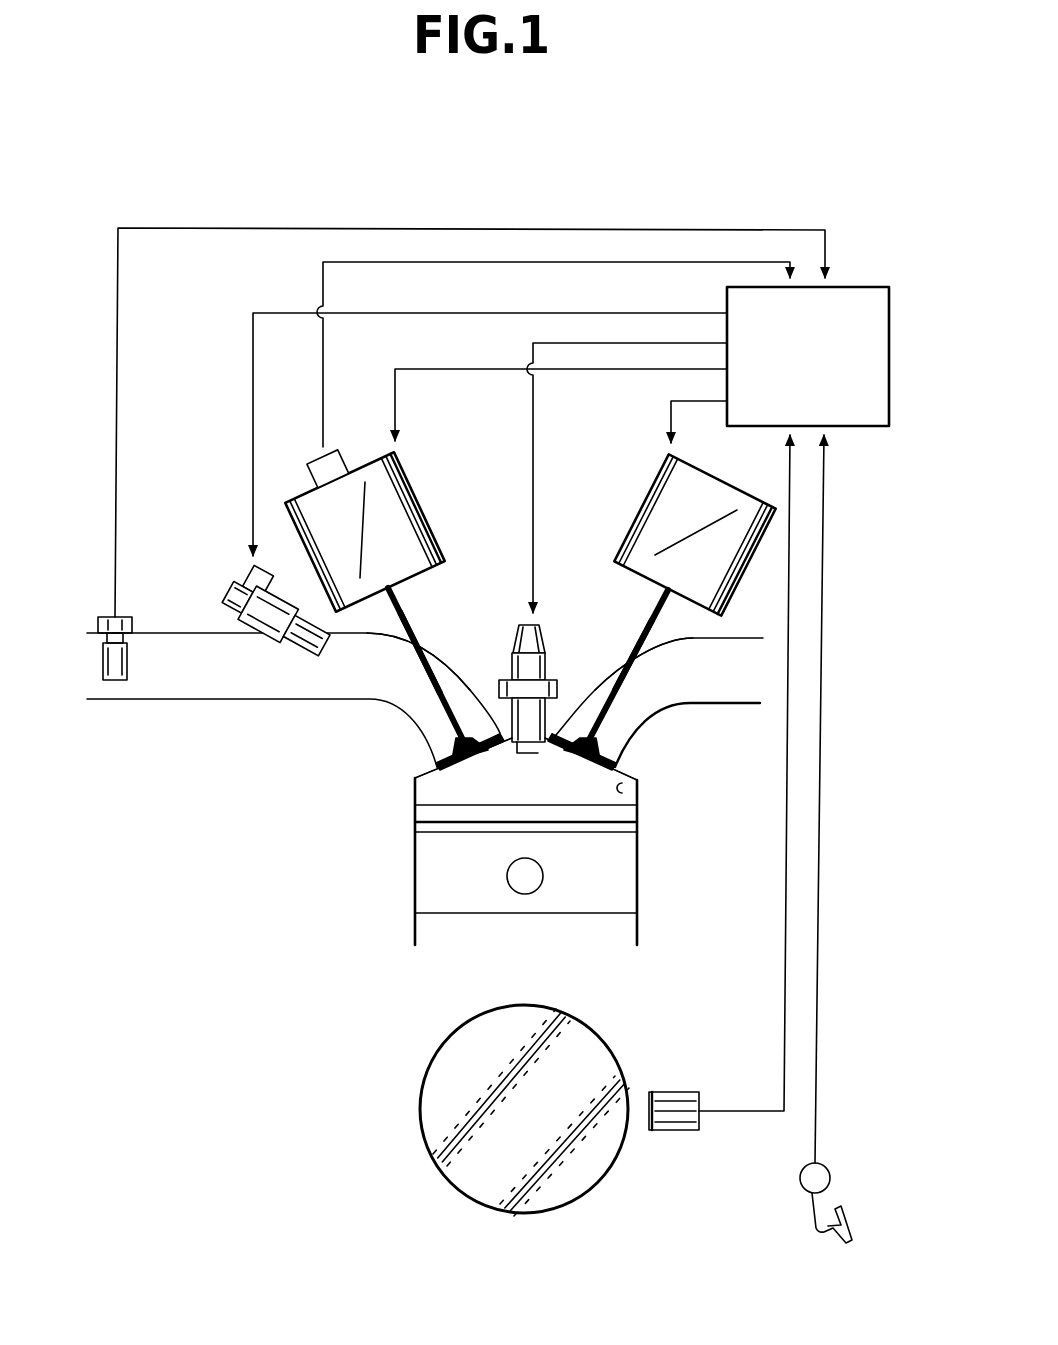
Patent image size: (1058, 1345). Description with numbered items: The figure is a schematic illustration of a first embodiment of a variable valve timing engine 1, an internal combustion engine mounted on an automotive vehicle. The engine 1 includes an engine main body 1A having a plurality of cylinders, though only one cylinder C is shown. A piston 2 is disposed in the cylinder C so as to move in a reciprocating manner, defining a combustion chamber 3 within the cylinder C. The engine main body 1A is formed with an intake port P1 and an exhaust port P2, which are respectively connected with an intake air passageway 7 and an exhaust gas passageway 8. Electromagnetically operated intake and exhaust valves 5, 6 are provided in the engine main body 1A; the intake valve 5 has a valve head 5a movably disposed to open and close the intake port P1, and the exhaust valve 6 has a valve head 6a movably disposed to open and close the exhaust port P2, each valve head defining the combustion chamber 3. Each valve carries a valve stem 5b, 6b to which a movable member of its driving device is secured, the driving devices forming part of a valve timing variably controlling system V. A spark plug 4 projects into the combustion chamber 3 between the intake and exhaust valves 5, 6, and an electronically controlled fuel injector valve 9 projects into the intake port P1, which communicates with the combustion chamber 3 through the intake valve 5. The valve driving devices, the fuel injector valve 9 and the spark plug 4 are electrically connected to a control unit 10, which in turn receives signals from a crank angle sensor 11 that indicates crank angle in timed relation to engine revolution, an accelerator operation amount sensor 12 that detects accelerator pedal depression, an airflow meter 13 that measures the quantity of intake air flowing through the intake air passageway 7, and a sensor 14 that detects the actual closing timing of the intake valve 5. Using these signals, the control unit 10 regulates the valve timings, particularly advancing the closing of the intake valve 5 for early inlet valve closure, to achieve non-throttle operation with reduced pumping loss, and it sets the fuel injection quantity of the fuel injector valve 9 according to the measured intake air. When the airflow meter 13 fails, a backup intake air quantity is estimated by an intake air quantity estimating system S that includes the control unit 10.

The variable valve timing engine 1 is at (340, 885).
The engine main body 1A is at (410, 893).
The piston 2 is at (618, 872).
The combustion chamber 3 is at (624, 790).
The spark plug 4 is at (537, 625).
The intake valve 5 is at (422, 605).
The valve head 5a is at (457, 744).
The valve stem 5b is at (433, 643).
The exhaust valve 6 is at (638, 611).
The valve head 6a is at (603, 743).
The valve stem 6b is at (637, 650).
The intake air passageway 7 is at (206, 700).
The exhaust gas passageway 8 is at (758, 707).
The fuel injector valve 9 is at (232, 582).
The control unit 10 is at (856, 287).
The crank angle sensor 11 is at (677, 1092).
The accelerator operation amount sensor 12 is at (800, 1178).
The airflow meter 13 is at (127, 617).
The sensor 14 is at (312, 452).
The engine cylinder C is at (438, 793).
The intake port P1 is at (393, 693).
The exhaust port P2 is at (645, 706).
The intake air quantity estimating system S is at (655, 226).
The valve timing variably controlling system V is at (830, 638).